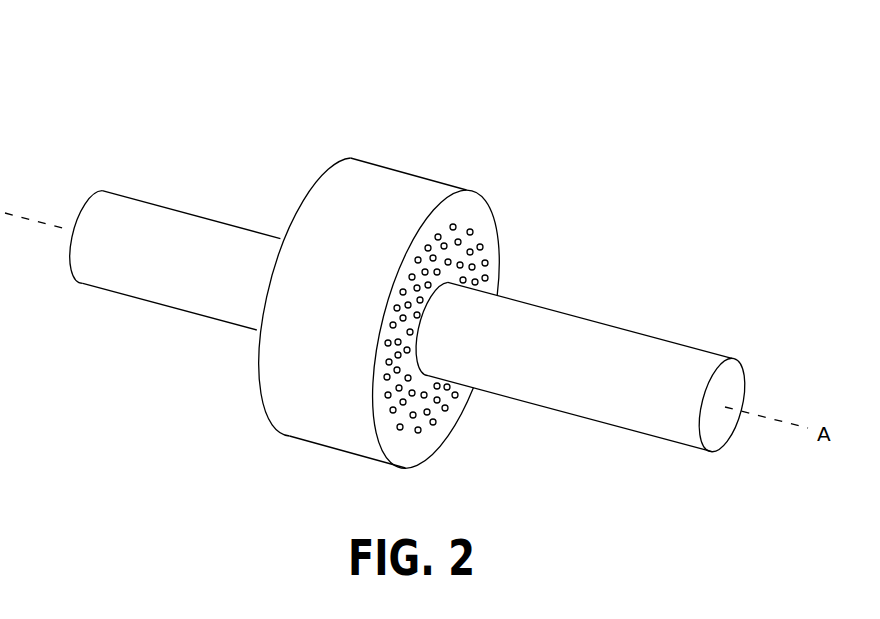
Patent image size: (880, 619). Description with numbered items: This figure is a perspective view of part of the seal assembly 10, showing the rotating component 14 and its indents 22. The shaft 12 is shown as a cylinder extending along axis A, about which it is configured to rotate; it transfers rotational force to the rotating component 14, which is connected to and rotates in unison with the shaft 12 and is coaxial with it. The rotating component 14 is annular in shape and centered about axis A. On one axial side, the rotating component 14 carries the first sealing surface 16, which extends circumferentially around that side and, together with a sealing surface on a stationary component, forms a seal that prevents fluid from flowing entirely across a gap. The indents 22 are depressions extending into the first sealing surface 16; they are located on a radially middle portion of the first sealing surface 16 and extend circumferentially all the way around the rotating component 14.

The seal assembly 10 is at (193, 103).
The shaft 12 is at (108, 278).
The rotating component 14 is at (394, 187).
The first sealing surface 16 is at (498, 218).
The indents 22 is at (435, 420).